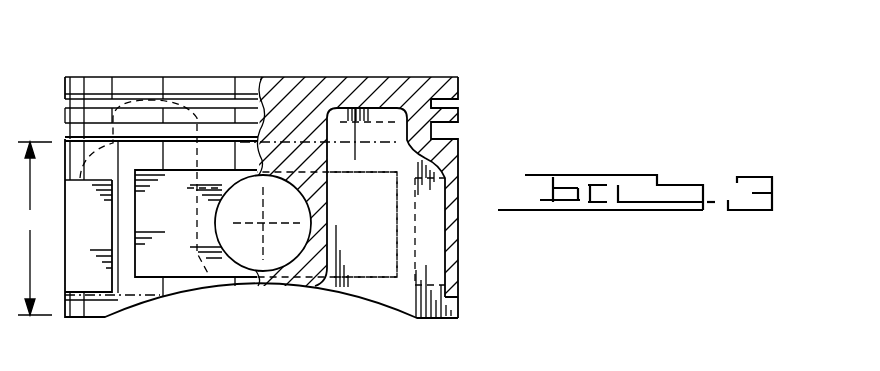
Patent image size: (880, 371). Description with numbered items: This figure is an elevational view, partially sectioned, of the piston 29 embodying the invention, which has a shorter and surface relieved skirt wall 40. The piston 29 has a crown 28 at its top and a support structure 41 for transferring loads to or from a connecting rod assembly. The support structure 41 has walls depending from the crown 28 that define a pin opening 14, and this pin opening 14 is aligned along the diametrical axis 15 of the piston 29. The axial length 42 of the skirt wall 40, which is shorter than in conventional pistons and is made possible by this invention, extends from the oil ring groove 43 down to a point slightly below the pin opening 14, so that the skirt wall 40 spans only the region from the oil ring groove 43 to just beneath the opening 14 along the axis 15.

The pin opening 14 is at (294, 212).
The diametrical axis 15 is at (262, 221).
The crown 28 is at (280, 85).
The piston 29 is at (475, 96).
The skirt wall 40 is at (459, 197).
The support structure 41 is at (318, 152).
The axial length 42 is at (35, 228).
The oil ring groove 43 is at (72, 139).